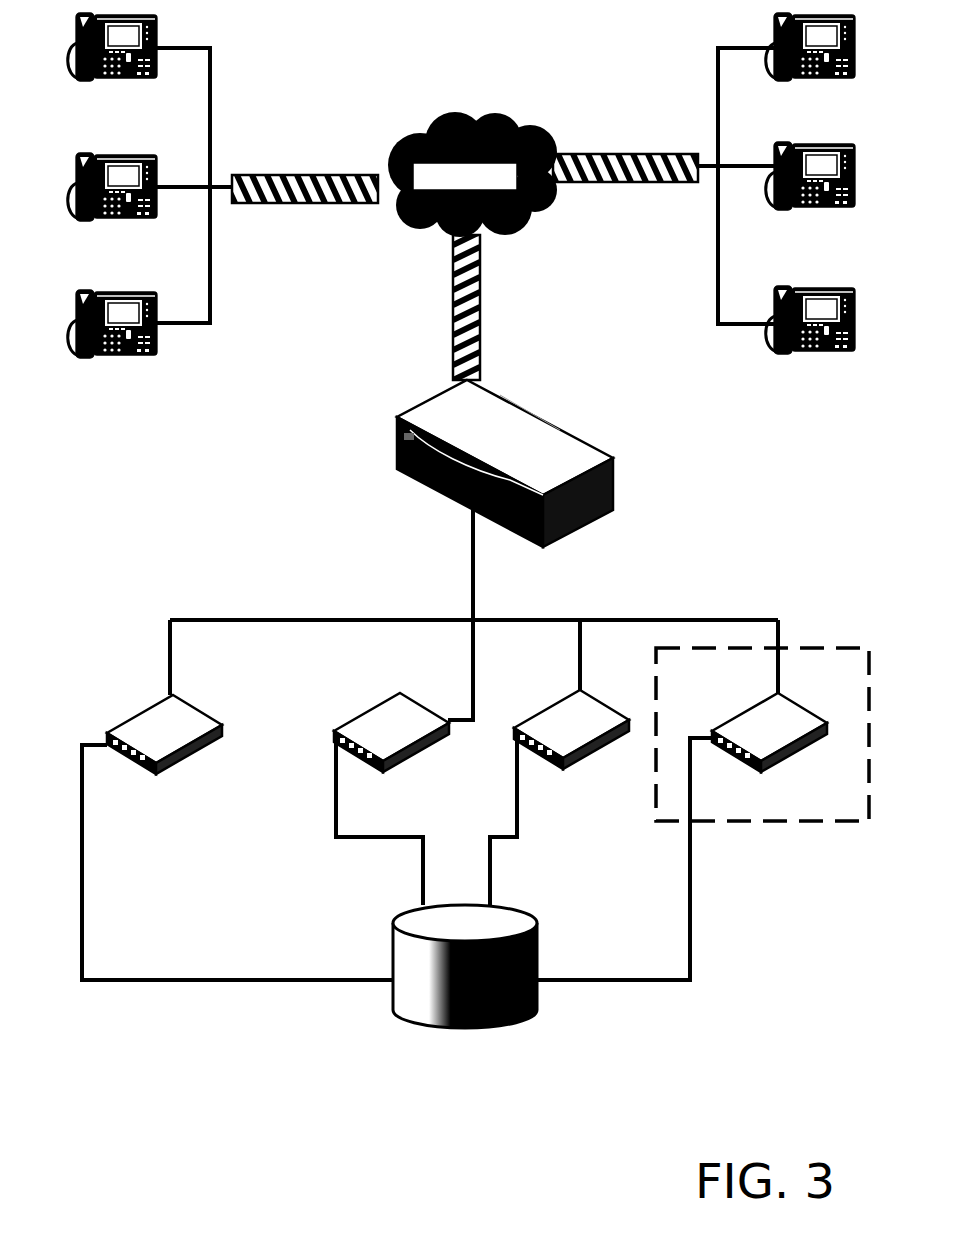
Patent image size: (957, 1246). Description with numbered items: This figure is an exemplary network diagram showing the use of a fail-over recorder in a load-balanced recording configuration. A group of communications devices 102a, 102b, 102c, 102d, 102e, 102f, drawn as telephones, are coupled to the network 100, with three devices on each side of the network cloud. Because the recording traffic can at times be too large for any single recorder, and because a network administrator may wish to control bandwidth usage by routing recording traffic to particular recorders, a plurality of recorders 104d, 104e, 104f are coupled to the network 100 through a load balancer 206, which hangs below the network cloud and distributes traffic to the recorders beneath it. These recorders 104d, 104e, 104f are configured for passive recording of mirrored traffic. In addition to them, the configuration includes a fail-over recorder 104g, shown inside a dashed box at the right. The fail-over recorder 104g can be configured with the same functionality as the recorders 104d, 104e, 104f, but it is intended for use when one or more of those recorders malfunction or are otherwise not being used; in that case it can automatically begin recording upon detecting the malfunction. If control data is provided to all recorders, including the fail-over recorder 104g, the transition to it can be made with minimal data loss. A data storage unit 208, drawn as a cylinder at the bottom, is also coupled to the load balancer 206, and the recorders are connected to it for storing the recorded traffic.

The network 100 is at (525, 222).
The communications device 102a is at (130, 82).
The communications device 102b is at (127, 222).
The communications device 102c is at (127, 358).
The communications device 102d is at (807, 82).
The communications device 102e is at (808, 207).
The communications device 102f is at (822, 358).
The load balancer 206 is at (428, 487).
The recorder 104d is at (222, 723).
The recorder 104e is at (398, 693).
The recorder 104f is at (558, 698).
The fail-over recorder 104g is at (762, 698).
The data storage unit 208 is at (537, 923).